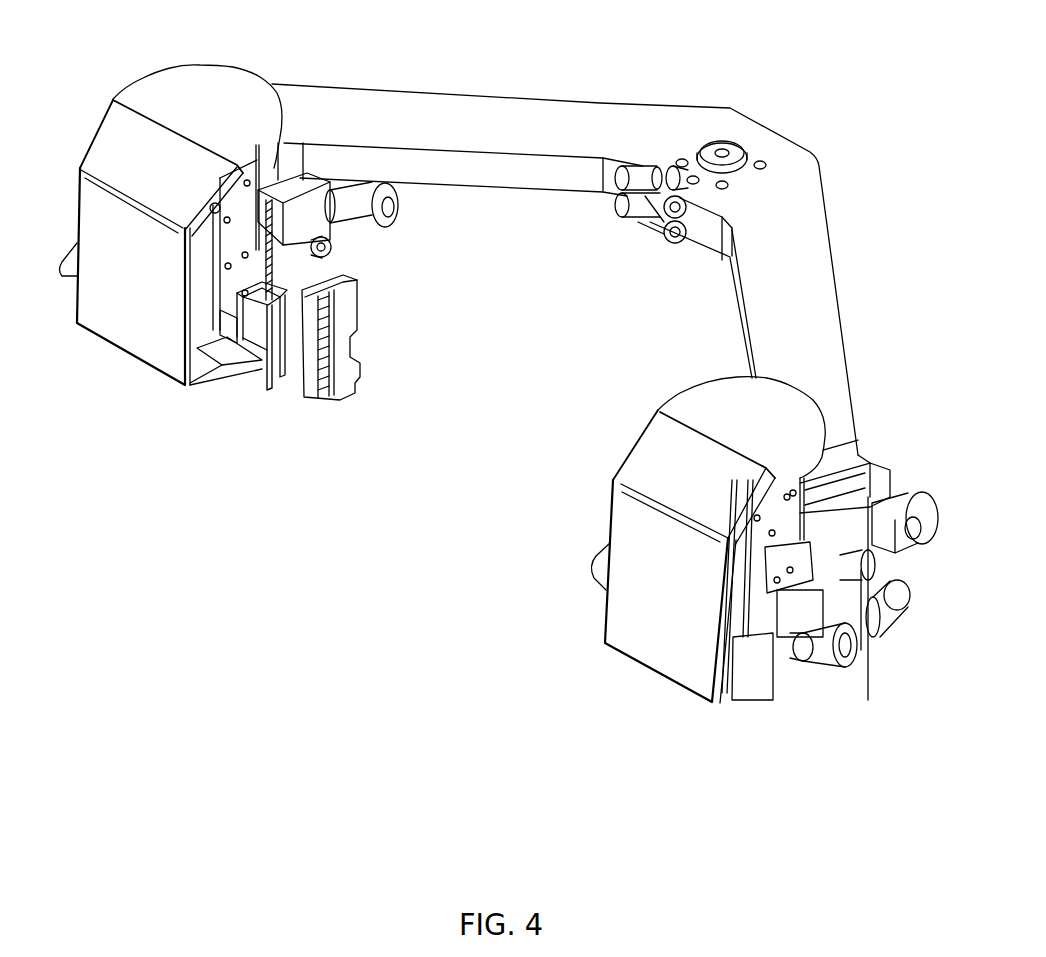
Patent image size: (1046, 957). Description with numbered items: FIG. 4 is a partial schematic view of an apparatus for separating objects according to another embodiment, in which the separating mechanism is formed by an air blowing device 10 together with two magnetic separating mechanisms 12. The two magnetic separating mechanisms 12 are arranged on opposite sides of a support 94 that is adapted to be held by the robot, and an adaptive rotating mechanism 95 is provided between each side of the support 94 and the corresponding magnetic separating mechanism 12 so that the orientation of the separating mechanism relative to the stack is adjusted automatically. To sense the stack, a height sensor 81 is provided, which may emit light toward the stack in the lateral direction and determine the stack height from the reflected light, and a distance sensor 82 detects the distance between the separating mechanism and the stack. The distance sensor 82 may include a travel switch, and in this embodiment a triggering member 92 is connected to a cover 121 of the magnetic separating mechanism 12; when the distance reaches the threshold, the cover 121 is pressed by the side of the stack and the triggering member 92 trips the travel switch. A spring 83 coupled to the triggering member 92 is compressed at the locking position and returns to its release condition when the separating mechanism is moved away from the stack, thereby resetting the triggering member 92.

The air blowing device 10 is at (825, 643).
The magnetic separating mechanism 12 is at (499, 476).
The cover 121 is at (165, 290).
The height sensor 81 is at (307, 358).
The distance sensor 82 is at (297, 345).
The spring 83 is at (265, 292).
The triggering member 92 is at (262, 368).
The support 94 is at (645, 138).
The adaptive rotating mechanism 95 is at (212, 112).